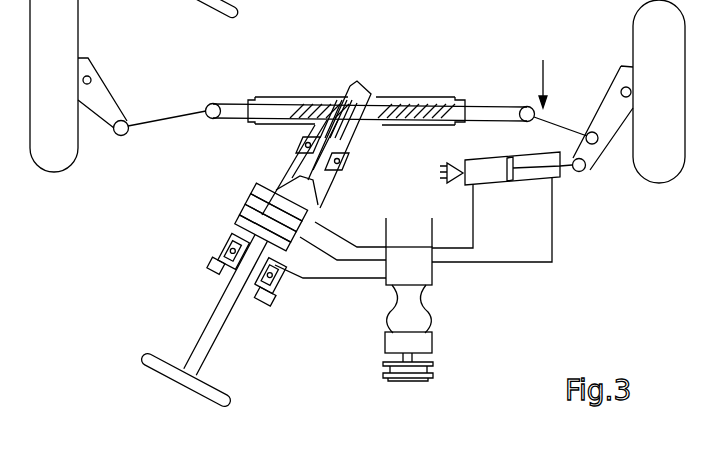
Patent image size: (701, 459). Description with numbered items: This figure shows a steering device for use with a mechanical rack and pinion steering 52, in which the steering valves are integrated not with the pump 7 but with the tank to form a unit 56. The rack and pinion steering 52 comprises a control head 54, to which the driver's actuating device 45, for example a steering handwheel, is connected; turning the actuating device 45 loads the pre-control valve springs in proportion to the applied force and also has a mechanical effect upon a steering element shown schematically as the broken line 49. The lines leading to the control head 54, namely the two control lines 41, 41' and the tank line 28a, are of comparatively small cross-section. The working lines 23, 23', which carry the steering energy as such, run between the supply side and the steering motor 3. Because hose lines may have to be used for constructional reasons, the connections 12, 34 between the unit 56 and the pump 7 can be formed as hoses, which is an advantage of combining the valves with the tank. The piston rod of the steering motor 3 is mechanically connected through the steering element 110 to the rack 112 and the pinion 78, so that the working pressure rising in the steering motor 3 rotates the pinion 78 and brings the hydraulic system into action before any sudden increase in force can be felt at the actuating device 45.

The rack and pinion steering 52 is at (406, 85).
The pinion 78 is at (345, 97).
The rack 112 is at (475, 115).
The steering element 49 is at (559, 84).
The steering element 110 is at (612, 118).
The steering motor 3 is at (528, 174).
The working line 23 is at (452, 216).
The working line 23' is at (523, 220).
The unit 56 is at (422, 272).
The control line 41' is at (348, 233).
The control line 41 is at (330, 309).
The connection 34 is at (430, 303).
The connection 12 is at (390, 312).
The pump 7 is at (420, 340).
The control head 54 is at (243, 207).
The tank line 28a is at (297, 273).
The actuating device 45 is at (163, 360).